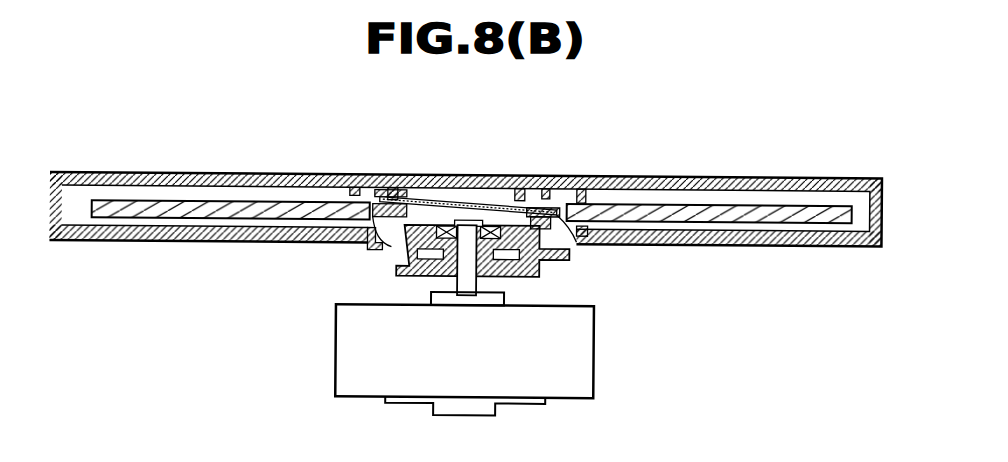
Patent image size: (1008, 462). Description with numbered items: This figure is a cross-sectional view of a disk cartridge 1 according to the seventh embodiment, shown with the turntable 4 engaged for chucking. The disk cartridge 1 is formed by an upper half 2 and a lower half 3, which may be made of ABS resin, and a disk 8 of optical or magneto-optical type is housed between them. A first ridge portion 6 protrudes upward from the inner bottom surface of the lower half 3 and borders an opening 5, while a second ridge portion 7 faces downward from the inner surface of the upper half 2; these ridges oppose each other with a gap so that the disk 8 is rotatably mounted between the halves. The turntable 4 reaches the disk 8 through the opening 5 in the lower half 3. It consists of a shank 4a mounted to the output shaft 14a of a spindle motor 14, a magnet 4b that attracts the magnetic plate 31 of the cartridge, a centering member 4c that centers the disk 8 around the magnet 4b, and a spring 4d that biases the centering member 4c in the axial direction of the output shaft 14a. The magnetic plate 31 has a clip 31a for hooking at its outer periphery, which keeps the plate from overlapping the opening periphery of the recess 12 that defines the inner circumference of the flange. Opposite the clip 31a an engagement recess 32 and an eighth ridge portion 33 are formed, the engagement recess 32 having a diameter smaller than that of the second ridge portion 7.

The disk cartridge 1 is at (888, 190).
The upper half 2 is at (873, 182).
The lower half 3 is at (867, 250).
The turntable 4 is at (563, 262).
The shank 4a is at (483, 290).
The magnet 4b is at (467, 197).
The centering member 4c is at (397, 262).
The spring 4d is at (415, 290).
The opening 5 is at (367, 245).
The first ridge portion 6 is at (600, 253).
The second ridge portion 7 is at (588, 195).
The disk 8 is at (715, 203).
The recess 12 is at (370, 197).
The spindle motor 14 is at (587, 365).
The output shaft 14a is at (470, 290).
The magnetic plate 31 is at (440, 195).
The clip 31a is at (375, 250).
The engagement recess 32 is at (398, 184).
The eighth ridge portion 33 is at (538, 197).